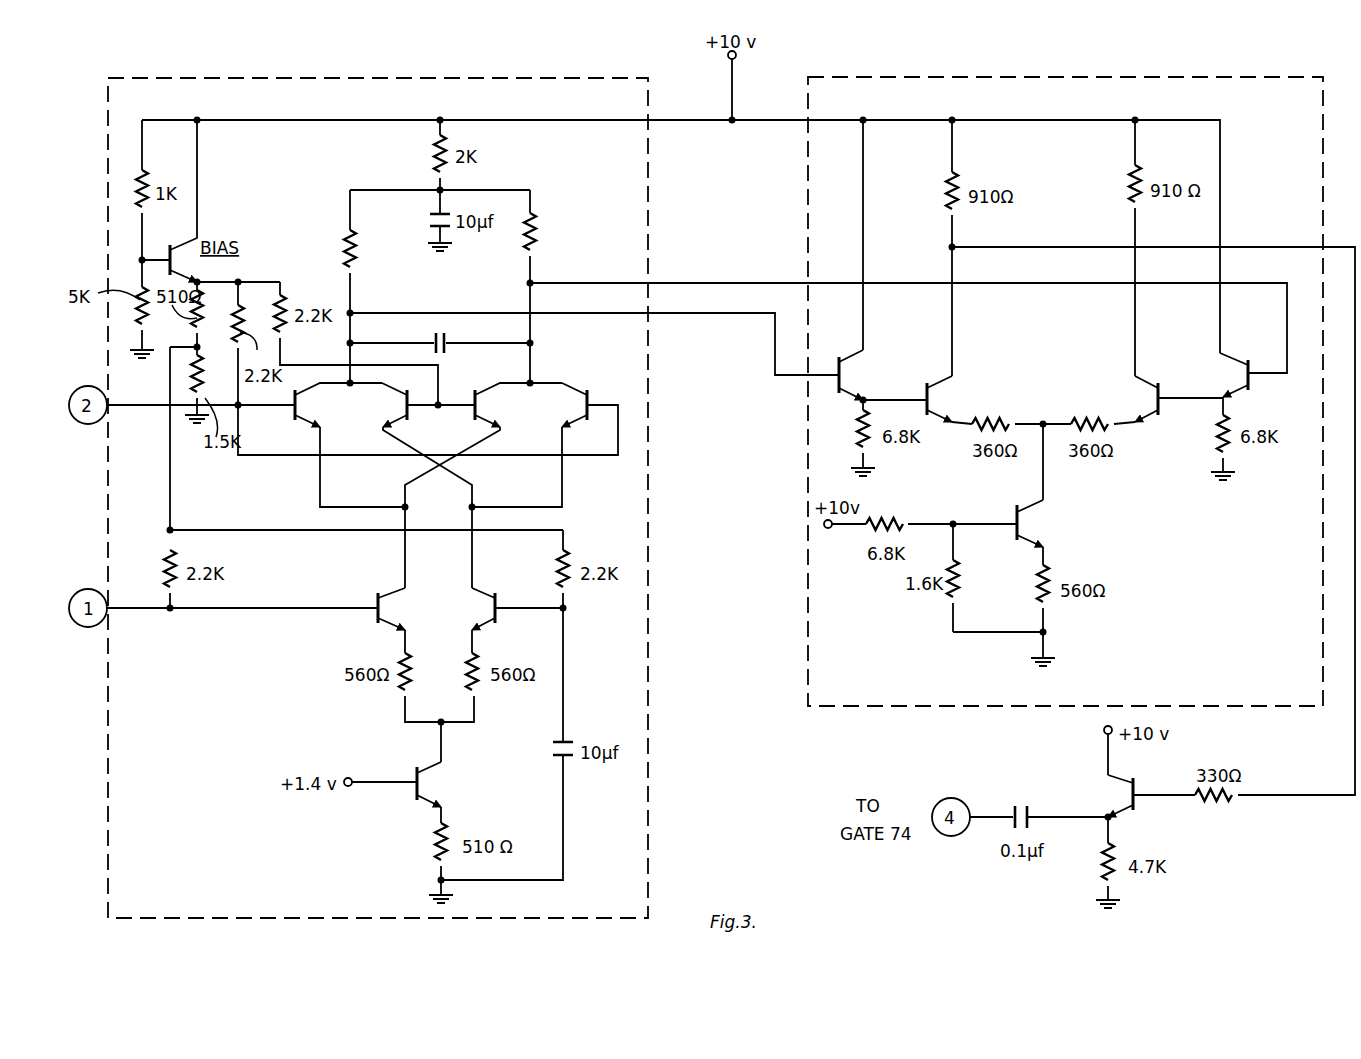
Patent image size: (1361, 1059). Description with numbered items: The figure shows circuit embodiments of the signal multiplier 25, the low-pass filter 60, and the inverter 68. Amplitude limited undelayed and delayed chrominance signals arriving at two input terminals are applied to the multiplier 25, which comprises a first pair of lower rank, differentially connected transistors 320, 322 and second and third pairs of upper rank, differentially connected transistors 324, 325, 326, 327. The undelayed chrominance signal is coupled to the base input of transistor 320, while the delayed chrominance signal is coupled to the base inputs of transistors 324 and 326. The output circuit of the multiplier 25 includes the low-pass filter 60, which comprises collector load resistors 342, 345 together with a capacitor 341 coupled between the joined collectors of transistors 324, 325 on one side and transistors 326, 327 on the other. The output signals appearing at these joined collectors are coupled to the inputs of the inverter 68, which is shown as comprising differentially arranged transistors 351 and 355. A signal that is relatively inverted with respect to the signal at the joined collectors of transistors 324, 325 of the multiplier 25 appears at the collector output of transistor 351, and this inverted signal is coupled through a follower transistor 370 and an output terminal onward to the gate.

The signal multiplier 25 is at (528, 78).
The low-pass filter 60 is at (439, 216).
The inverter 68 is at (1108, 78).
The capacitor 341 is at (446, 338).
The collector load resistor 342 is at (358, 240).
The collector load resistor 345 is at (538, 223).
The upper rank differentially connected transistor 324 is at (338, 405).
The upper rank differentially connected transistor 325 is at (385, 405).
The upper rank differentially connected transistor 326 is at (565, 405).
The upper rank differentially connected transistor 327 is at (518, 405).
The lower rank differentially connected transistor 320 is at (401, 609).
The lower rank differentially connected transistor 322 is at (474, 609).
The differentially arranged transistor 351 is at (951, 399).
The differentially arranged transistor 355 is at (1134, 399).
The follower transistor 370 is at (1108, 796).